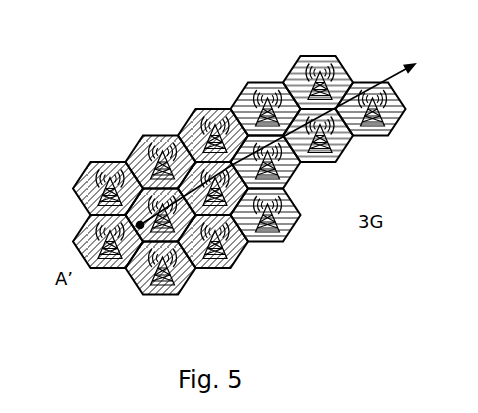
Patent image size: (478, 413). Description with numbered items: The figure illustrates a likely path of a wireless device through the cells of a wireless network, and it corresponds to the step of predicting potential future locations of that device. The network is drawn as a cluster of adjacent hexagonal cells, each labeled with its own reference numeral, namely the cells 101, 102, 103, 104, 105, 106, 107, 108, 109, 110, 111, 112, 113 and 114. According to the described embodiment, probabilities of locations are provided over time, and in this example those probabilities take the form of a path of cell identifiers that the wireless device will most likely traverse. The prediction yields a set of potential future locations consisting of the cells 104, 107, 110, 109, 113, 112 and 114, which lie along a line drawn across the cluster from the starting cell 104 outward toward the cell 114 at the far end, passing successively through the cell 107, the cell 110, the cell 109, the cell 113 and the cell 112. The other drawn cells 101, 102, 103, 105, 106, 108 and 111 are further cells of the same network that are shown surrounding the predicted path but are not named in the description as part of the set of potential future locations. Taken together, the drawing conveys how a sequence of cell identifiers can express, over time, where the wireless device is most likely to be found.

The cell 1 (hatched cellular coverage cell) 101 is at (79, 180).
The cell 2 102 is at (78, 236).
The cell 3 103 is at (125, 159).
The cell 104 is at (130, 275).
The cell 5 105 is at (183, 289).
The cell 6 106 is at (197, 109).
The cell 107 is at (235, 213).
The cell 8 108 is at (232, 270).
The cell 109 is at (249, 83).
The cell 110 is at (288, 168).
The cell 11 111 is at (292, 231).
The cell 112 is at (323, 58).
The cell 113 is at (340, 143).
The cell 114 is at (407, 108).